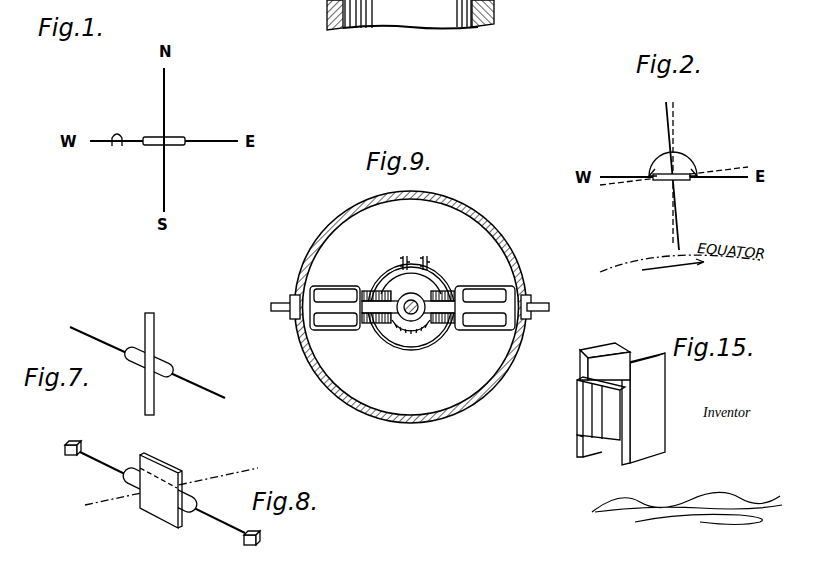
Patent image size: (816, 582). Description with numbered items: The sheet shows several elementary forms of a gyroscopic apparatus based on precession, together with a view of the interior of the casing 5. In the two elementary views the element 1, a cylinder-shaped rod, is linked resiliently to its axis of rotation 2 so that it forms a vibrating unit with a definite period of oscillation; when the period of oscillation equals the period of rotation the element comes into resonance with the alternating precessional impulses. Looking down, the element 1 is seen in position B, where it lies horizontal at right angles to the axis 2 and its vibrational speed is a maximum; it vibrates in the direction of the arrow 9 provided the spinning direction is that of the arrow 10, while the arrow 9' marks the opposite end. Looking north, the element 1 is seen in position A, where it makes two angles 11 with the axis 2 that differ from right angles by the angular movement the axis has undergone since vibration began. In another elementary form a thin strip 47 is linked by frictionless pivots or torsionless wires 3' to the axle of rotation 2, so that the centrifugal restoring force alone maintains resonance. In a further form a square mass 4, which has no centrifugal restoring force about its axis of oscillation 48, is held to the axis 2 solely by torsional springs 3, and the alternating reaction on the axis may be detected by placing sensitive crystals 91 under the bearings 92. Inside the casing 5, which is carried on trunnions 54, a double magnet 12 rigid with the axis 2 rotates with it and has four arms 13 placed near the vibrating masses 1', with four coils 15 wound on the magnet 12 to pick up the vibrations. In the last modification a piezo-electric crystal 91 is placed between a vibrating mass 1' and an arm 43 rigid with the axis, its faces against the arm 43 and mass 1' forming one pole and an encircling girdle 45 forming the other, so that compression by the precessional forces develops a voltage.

In FIG. 1, the element 1 is at (176, 140).
In FIG. 2, the element 1 is at (658, 176).
In FIG. 9, the vibrating masses 1' is at (412, 296).
In FIG. 15, the vibrating masses 1' is at (655, 409).
In FIG. 1, the axis 2 is at (212, 136).
In FIG. 2, the axis 2 is at (605, 170).
In FIG. 7, the axis 2 is at (84, 332).
In FIG. 8, the axis 2 is at (103, 462).
In FIG. 8, the torsional springs 3 is at (169, 504).
In FIG. 7, the frictionless pivots or torsionless wires 3' is at (151, 367).
In FIG. 8, the square 4 is at (162, 461).
In FIG. 9, the casing 5 is at (462, 206).
In FIG. 1, the arrow 9 is at (187, 67).
In FIG. 1, the direction arrow 9' is at (146, 208).
In FIG. 1, the arrow 10 is at (122, 134).
In FIG. 2, the angles 11 is at (664, 160).
In FIG. 9, the double magnet 12 is at (420, 340).
In FIG. 9, the arms 13 is at (338, 294).
In FIG. 9, the coils 15 is at (376, 290).
In FIG. 15, the arm 43 is at (612, 350).
In FIG. 15, the girdle 45 is at (592, 416).
In FIG. 7, the strip 47 is at (156, 328).
In FIG. 7, the axis of oscillation 48 is at (143, 363).
In FIG. 8, the axis of oscillation 48 is at (203, 480).
In FIG. 9, the trunnions 54 is at (281, 300).
In FIG. 8, the crystal 91 is at (69, 458).
In FIG. 15, the crystal 91 is at (580, 416).
In FIG. 8, the bearings 92 is at (79, 443).
In FIG. 2, the position A is at (734, 123).
In FIG. 1, the position B is at (227, 82).